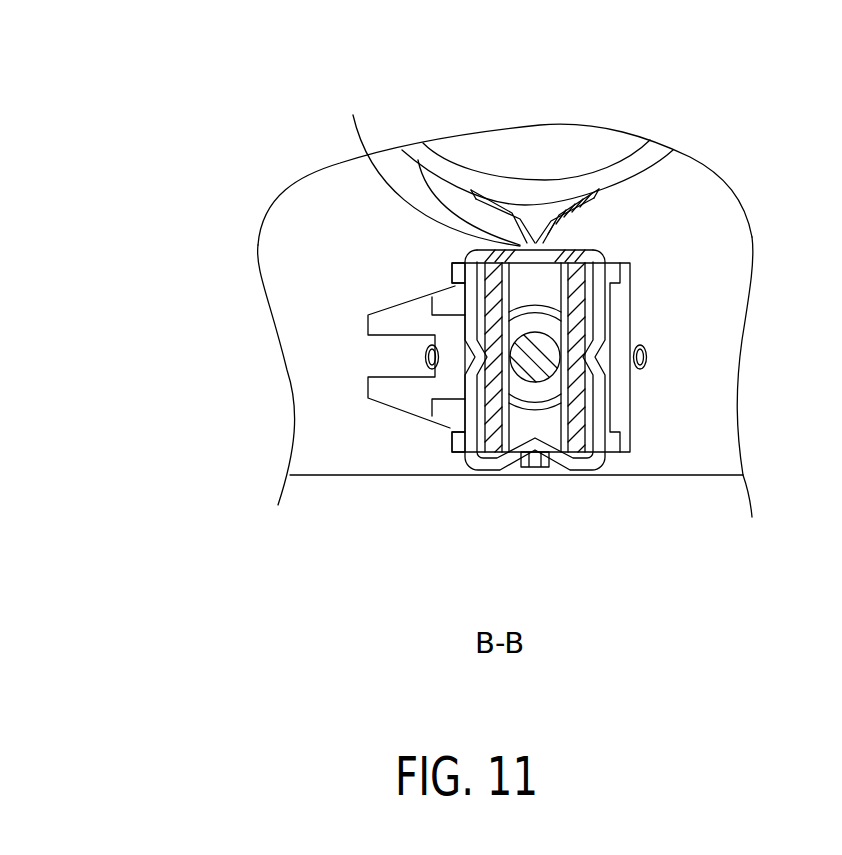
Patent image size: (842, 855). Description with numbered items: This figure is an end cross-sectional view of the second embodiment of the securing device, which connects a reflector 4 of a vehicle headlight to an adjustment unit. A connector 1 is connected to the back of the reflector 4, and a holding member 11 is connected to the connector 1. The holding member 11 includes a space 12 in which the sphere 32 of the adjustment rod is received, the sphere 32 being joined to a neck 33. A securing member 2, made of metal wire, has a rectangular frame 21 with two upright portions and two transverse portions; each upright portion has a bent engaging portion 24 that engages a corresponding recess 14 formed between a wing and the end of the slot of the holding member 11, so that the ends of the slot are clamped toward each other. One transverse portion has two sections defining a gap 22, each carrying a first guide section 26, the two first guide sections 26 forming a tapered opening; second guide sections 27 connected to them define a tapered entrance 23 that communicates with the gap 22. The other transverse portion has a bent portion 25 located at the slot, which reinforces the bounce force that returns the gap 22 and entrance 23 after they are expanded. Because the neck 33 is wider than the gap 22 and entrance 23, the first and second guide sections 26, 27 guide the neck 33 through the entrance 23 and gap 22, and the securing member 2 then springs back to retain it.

The connector 1 is at (393, 411).
The securing member 2 is at (592, 211).
The reflector 4 is at (323, 205).
The holding member 11 is at (618, 385).
The space 12 is at (521, 422).
The recess 14 is at (480, 403).
The frame 21 is at (465, 310).
The gap 22 is at (353, 115).
The entrance 23 is at (535, 192).
The bent engaging portion 24 is at (470, 357).
The bent portion 25 is at (538, 452).
The first guide section 26 is at (418, 160).
The second guide section 27 is at (492, 192).
The sphere 32 is at (548, 312).
The neck 33 is at (543, 347).